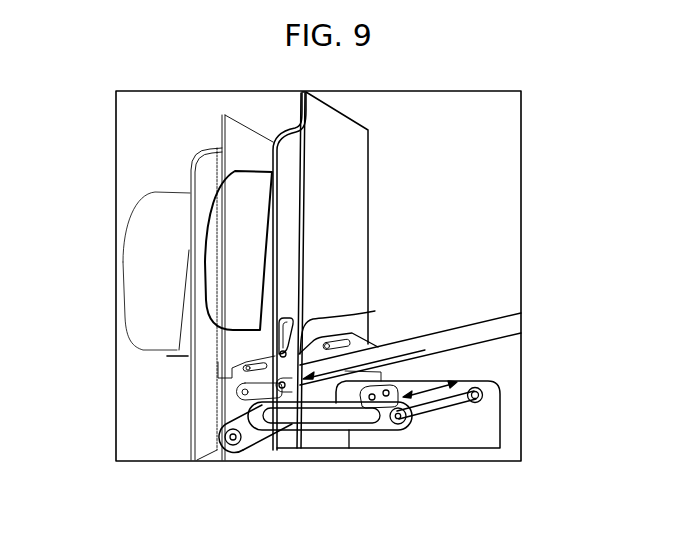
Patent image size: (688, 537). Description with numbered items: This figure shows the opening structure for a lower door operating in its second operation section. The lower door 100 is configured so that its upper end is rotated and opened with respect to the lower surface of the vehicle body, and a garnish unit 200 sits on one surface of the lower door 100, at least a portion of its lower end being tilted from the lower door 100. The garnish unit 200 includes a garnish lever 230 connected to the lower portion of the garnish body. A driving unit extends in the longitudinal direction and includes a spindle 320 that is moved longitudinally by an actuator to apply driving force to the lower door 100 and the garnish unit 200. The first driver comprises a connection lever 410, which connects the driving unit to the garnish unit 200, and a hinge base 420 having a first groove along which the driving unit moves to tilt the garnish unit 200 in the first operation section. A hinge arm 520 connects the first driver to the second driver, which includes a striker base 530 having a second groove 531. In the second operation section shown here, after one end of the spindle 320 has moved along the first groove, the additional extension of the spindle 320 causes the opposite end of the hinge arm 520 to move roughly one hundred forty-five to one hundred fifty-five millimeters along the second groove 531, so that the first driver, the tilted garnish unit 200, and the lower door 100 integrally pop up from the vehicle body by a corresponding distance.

The lower door 100 is at (288, 165).
The garnish unit 200 is at (223, 267).
The garnish lever 230 is at (271, 333).
The spindle 320 is at (500, 322).
The connection lever 410 is at (375, 311).
The hinge base 420 is at (228, 404).
The hinge arm 520 is at (325, 417).
The striker base 530 is at (483, 415).
The second groove 531 is at (435, 405).